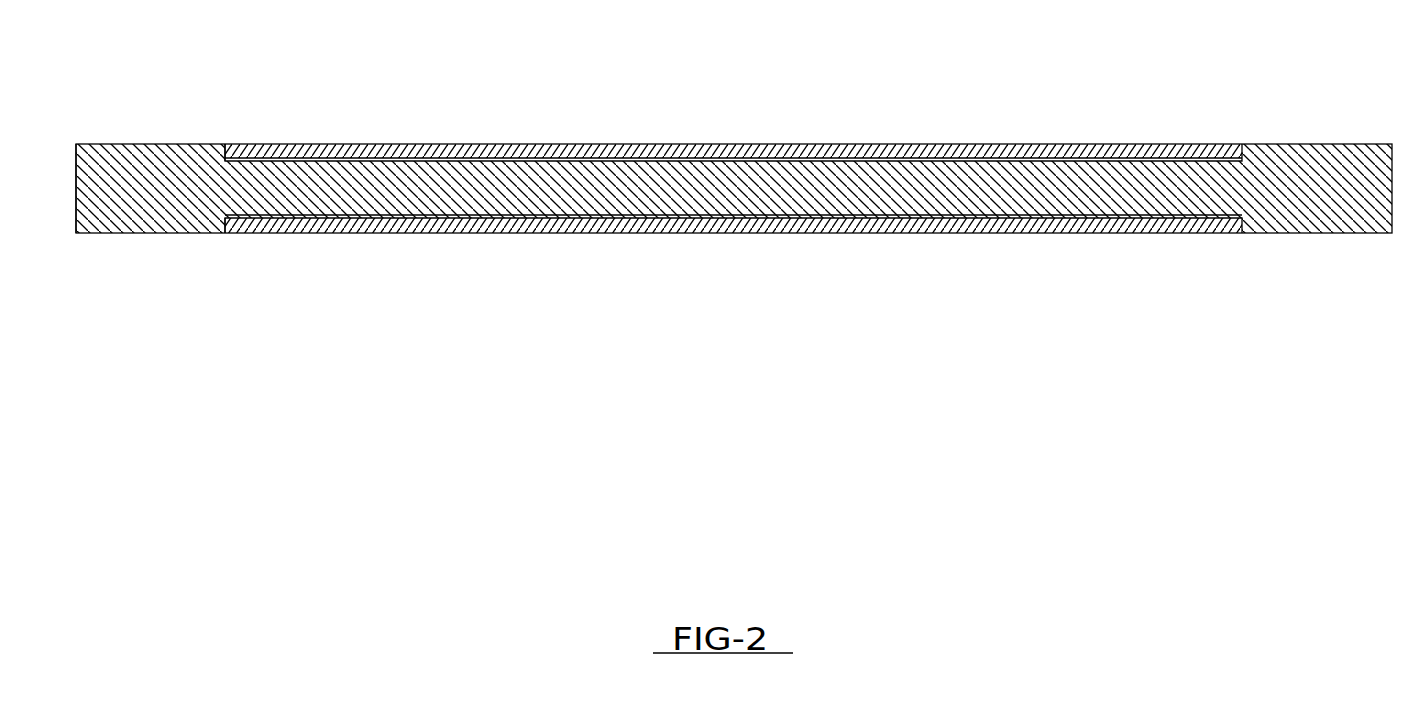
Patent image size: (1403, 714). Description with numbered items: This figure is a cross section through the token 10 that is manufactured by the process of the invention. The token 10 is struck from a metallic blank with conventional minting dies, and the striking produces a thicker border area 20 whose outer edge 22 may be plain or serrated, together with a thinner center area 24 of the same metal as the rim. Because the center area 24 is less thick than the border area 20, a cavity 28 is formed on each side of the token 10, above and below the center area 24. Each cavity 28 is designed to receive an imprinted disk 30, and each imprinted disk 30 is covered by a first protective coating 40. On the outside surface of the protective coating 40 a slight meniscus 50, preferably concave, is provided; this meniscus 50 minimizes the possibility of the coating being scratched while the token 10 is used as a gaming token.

The token 10 is at (362, 297).
The border area 20 is at (134, 144).
The edge 22 is at (76, 186).
The center area 24 is at (722, 205).
The cavity 28 is at (215, 144).
The imprinted disk 30 is at (980, 160).
The first protective coating 40 is at (1178, 150).
The meniscus 50 is at (724, 144).